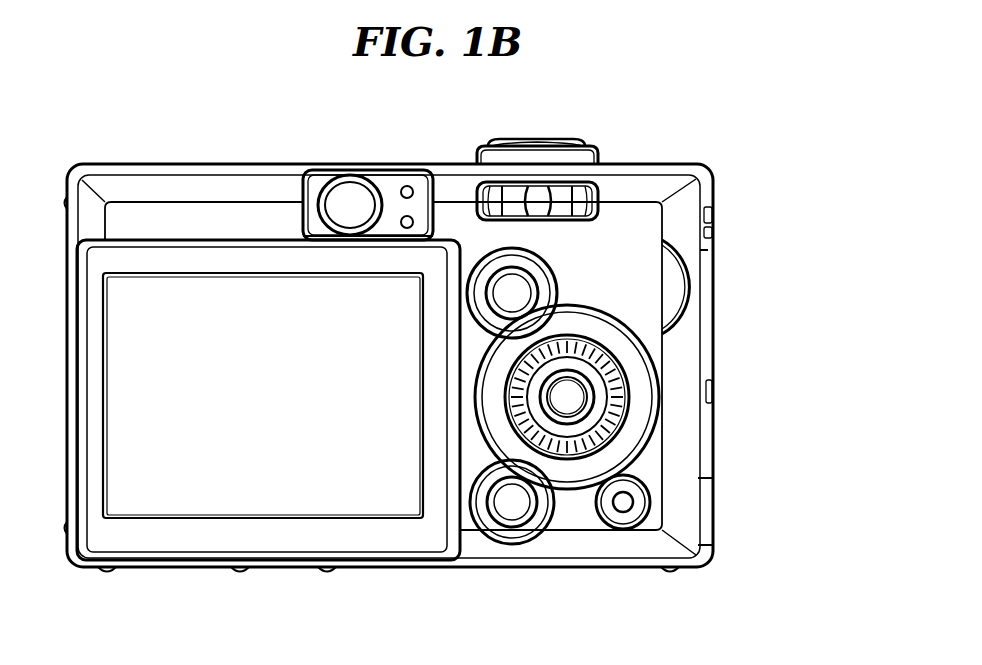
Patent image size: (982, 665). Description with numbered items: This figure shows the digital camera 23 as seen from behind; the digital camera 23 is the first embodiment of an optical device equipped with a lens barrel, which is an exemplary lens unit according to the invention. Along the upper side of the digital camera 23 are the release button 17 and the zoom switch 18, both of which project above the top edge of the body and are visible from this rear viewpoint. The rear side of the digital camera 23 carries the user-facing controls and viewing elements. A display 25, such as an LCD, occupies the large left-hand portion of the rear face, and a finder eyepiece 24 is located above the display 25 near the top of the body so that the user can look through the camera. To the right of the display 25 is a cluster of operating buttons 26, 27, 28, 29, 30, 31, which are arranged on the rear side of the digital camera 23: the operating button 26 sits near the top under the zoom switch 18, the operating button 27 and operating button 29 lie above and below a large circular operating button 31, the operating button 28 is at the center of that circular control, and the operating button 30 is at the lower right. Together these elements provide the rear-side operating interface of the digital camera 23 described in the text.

The release button 17 is at (537, 140).
The zoom switch 18 is at (583, 157).
The digital camera 23 is at (203, 188).
The finder eyepiece 24 is at (350, 198).
The display 25 is at (342, 495).
The operating button 26 is at (567, 197).
The operating button 27 is at (512, 293).
The operating button 28 is at (575, 397).
The operating button 29 is at (510, 503).
The operating button 30 is at (622, 503).
The operating button 31 is at (620, 425).